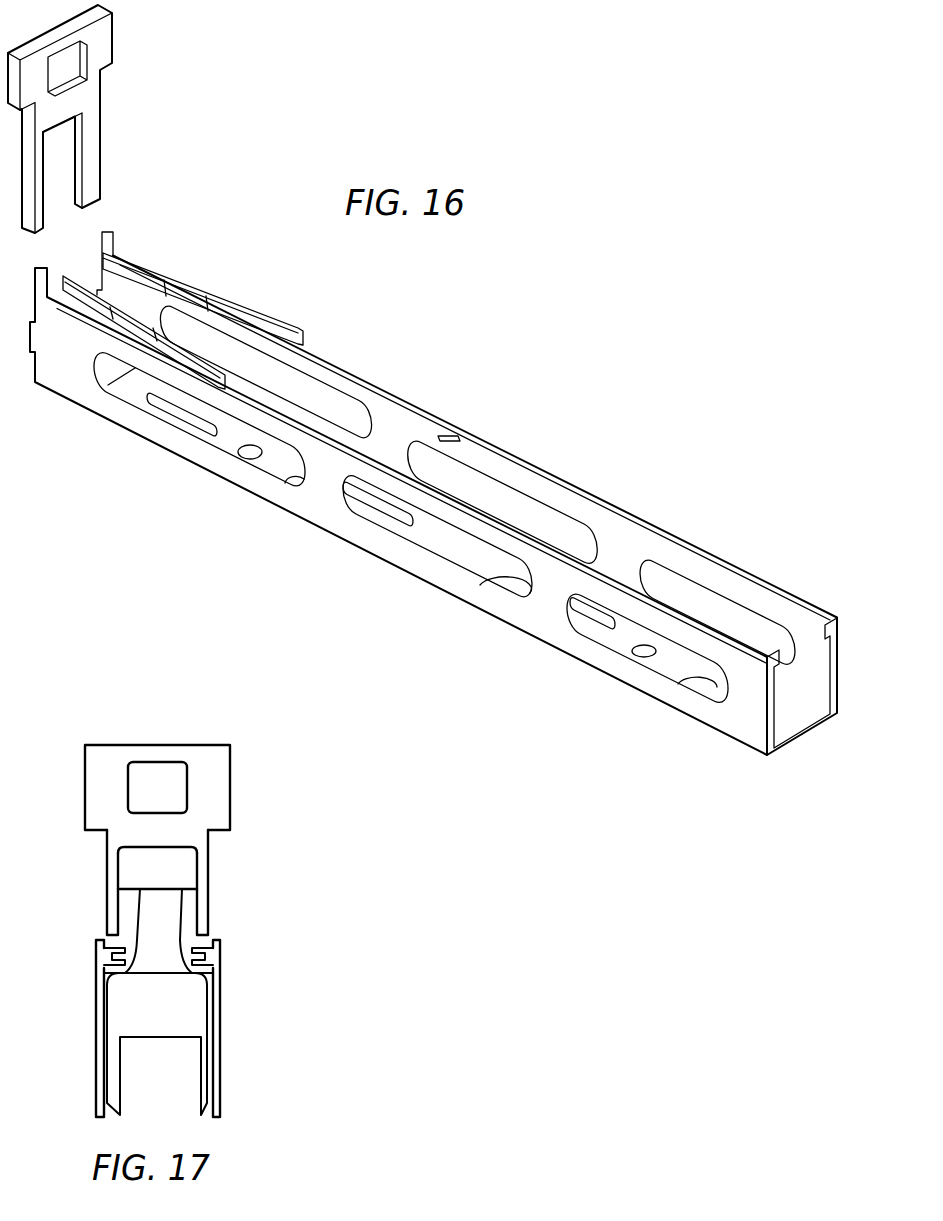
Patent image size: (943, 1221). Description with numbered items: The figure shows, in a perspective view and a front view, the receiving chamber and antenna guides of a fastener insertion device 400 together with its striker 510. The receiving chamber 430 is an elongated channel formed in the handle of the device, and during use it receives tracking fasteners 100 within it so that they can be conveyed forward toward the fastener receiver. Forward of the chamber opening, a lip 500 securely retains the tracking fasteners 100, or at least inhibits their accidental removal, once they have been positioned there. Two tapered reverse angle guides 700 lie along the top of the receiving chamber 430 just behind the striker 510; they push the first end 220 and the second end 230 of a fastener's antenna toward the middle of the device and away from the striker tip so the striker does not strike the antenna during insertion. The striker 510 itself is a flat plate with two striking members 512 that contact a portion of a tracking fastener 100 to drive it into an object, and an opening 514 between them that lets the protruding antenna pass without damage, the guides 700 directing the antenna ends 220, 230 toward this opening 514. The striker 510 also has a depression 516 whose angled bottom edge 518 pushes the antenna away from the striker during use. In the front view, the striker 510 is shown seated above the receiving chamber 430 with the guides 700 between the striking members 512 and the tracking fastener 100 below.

In FIG. 16, the striker 510 is at (114, 42).
In FIG. 17, the striker 510 is at (188, 745).
In FIG. 16, the depression 516 is at (68, 148).
In FIG. 16, the angled bottom edge 518 is at (70, 167).
In FIG. 16, the fastener insertion device 400 is at (528, 355).
In FIG. 16, the receiving chamber 430 is at (628, 513).
In FIG. 17, the receiving chamber 430 is at (222, 1010).
In FIG. 16, the tapered reverse angle guide 700 is at (303, 337).
In FIG. 17, the tapered reverse angle guide 700 is at (117, 958).
In FIG. 16, the lip 500 is at (432, 420).
In FIG. 17, the striking member 512 is at (107, 893).
In FIG. 17, the opening 514 is at (162, 897).
In FIG. 17, the second end of the antenna 230 is at (137, 926).
In FIG. 17, the first end of the antenna 220 is at (183, 925).
In FIG. 17, the tracking fastener 100 is at (160, 1040).